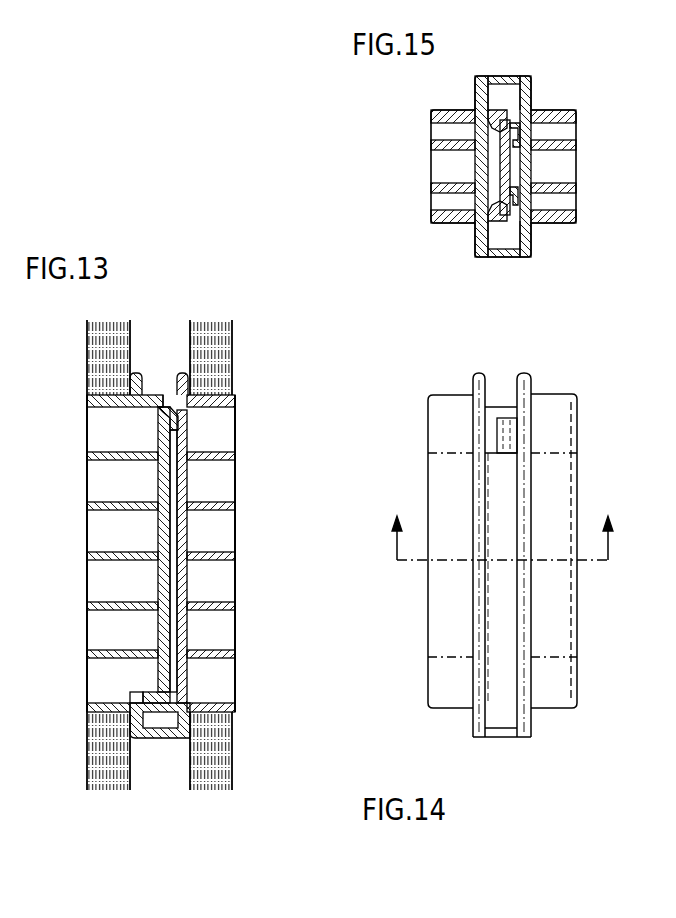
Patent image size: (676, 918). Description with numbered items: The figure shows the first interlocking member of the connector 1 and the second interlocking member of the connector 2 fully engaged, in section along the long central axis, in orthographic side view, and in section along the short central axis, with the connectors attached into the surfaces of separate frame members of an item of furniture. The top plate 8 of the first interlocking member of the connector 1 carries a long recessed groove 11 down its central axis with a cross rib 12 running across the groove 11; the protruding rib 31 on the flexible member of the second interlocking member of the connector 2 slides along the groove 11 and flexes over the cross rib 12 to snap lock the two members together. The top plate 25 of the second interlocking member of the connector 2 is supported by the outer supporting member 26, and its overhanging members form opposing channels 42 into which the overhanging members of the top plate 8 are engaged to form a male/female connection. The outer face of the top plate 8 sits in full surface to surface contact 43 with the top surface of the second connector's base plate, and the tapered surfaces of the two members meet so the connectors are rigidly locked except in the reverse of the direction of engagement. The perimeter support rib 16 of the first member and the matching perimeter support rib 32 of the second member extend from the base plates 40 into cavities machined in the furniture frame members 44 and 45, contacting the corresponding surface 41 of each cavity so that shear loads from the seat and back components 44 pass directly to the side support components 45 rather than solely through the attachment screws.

In FIG. 13, the first interlocking member of the connector 1 is at (87, 577).
In FIG. 14, the first interlocking member of the connector 1 is at (446, 395).
In FIG. 15, the first interlocking member of the connector 1 is at (476, 80).
In FIG. 13, the second interlocking member of the connector 2 is at (236, 622).
In FIG. 14, the second interlocking member of the connector 2 is at (574, 452).
In FIG. 15, the second interlocking member of the connector 2 is at (533, 92).
In FIG. 15, the top plate 8 is at (492, 203).
In FIG. 13, the recessed groove 11 is at (177, 532).
In FIG. 13, the cross rib 12 is at (170, 433).
In FIG. 13, the perimeter support rib 16 is at (132, 700).
In FIG. 15, the top plate 25 is at (490, 132).
In FIG. 15, the outer supporting member 26 is at (506, 118).
In FIG. 13, the protruding rib 31 is at (181, 420).
In FIG. 13, the perimeter support rib 32 is at (212, 699).
In FIG. 13, the base plates 40 is at (130, 388).
In FIG. 13, the corresponding surface of the cavity 41 is at (212, 391).
In FIG. 15, the opposing channels 42 is at (480, 253).
In FIG. 15, the full surface to surface contact 43 is at (522, 150).
In FIG. 13, the furniture frame members 44 is at (105, 752).
In FIG. 13, the furniture frame members 45 is at (215, 748).